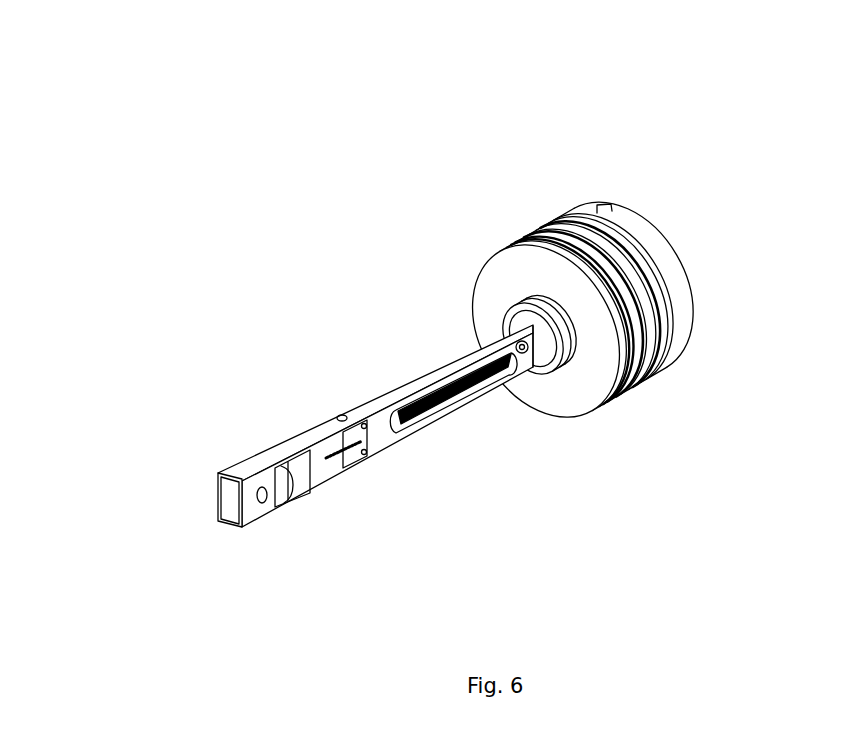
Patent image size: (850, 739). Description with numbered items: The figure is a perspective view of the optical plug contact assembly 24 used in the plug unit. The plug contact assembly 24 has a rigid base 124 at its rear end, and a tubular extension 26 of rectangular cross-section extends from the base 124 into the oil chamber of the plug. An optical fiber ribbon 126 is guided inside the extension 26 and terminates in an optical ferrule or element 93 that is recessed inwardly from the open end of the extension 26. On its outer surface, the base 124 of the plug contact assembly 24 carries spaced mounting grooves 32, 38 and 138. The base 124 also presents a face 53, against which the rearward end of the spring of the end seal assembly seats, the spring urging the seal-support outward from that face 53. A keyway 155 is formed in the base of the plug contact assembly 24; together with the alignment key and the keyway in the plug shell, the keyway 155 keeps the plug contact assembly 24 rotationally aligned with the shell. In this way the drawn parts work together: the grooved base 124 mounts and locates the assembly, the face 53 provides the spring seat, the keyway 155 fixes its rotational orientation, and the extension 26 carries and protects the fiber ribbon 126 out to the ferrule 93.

The plug contact assembly 24 is at (403, 71).
The tubular extension 26 is at (322, 421).
The optical ferrule 93 is at (218, 476).
The rigid base 124 is at (676, 267).
The keyway 155 is at (612, 208).
The mounting groove 38 is at (667, 313).
The mounting groove 32 is at (625, 331).
The mounting groove 138 is at (568, 337).
The face 53 is at (557, 392).
The optical fiber ribbon 126 is at (441, 393).